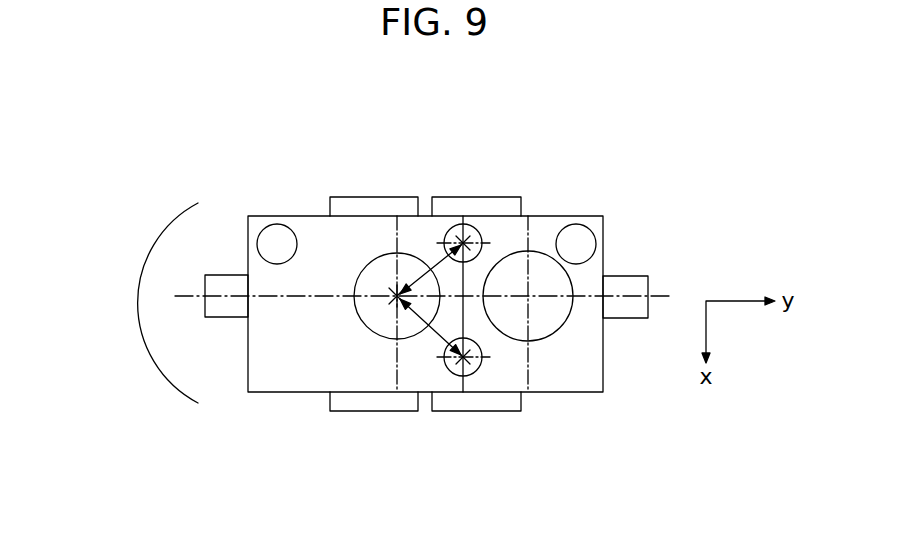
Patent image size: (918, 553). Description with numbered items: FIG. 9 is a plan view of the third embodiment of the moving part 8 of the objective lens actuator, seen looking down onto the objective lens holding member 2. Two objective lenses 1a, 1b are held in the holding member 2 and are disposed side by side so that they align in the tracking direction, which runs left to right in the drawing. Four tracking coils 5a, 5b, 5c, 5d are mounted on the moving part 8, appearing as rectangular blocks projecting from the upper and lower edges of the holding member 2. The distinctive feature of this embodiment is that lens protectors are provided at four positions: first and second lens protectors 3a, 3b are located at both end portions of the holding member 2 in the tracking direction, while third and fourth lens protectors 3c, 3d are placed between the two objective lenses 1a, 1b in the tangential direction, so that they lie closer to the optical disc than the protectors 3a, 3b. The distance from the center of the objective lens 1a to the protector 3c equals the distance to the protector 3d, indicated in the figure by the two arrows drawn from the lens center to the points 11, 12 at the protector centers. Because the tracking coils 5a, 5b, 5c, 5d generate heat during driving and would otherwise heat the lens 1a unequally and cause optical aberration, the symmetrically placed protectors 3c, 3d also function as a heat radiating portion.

The objective lens 1a is at (372, 315).
The objective lens 1b is at (557, 318).
The objective lens holding member 2 is at (273, 384).
The first lens protector 3a is at (282, 228).
The second lens protector 3b is at (578, 232).
The third lens protector 3c is at (477, 365).
The fourth lens protector 3d is at (461, 240).
The tracking coil 5a is at (358, 403).
The tracking coil 5b is at (478, 408).
The tracking coil 5c is at (347, 198).
The tracking coil 5d is at (498, 203).
The moving part 8 is at (138, 300).
The center of fixing hole 11 is at (435, 258).
The center of fixing hole 12 is at (435, 337).